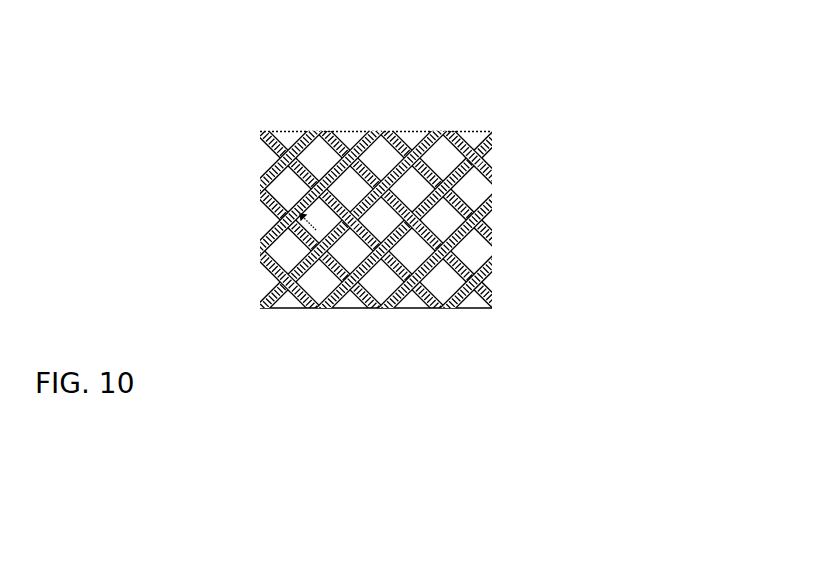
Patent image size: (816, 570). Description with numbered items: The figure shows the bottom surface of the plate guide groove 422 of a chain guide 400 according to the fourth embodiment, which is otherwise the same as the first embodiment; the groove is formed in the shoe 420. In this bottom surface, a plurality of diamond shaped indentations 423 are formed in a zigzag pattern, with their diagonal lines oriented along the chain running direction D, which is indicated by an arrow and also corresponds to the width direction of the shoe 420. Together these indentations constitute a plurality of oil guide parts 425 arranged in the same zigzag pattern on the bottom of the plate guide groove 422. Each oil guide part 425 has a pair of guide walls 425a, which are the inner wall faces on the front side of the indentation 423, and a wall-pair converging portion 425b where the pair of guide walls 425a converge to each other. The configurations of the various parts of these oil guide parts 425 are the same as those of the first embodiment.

The chain guide 400 is at (622, 116).
The shoe 420 is at (159, 85).
The plate guide groove 422 is at (381, 187).
The oil guide part 425 is at (473, 124).
The guide wall 425a is at (425, 195).
The wall-pair converging portion 425b is at (402, 180).
The diamond shaped indentation 423 is at (472, 189).
The chain running direction D is at (555, 350).